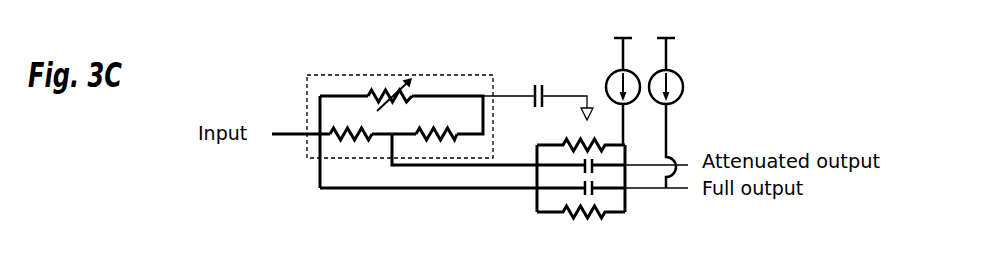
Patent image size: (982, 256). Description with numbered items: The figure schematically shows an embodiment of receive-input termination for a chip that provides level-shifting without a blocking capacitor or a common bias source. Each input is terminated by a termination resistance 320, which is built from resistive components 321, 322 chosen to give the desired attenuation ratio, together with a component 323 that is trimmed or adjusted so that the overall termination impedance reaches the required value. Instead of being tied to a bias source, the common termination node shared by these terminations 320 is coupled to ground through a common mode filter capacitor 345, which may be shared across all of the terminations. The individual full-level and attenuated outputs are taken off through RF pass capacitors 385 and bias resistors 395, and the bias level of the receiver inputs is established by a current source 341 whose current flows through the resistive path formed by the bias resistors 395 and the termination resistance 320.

The termination resistance 320 is at (298, 100).
The resistive component 321 is at (343, 106).
The resistive component 322 is at (450, 113).
The trim component 323 is at (387, 69).
The current source 341 is at (638, 66).
The common mode filter capacitor 345 is at (544, 75).
The RF pass capacitors 385 is at (576, 172).
The bias resistors 395 is at (608, 161).